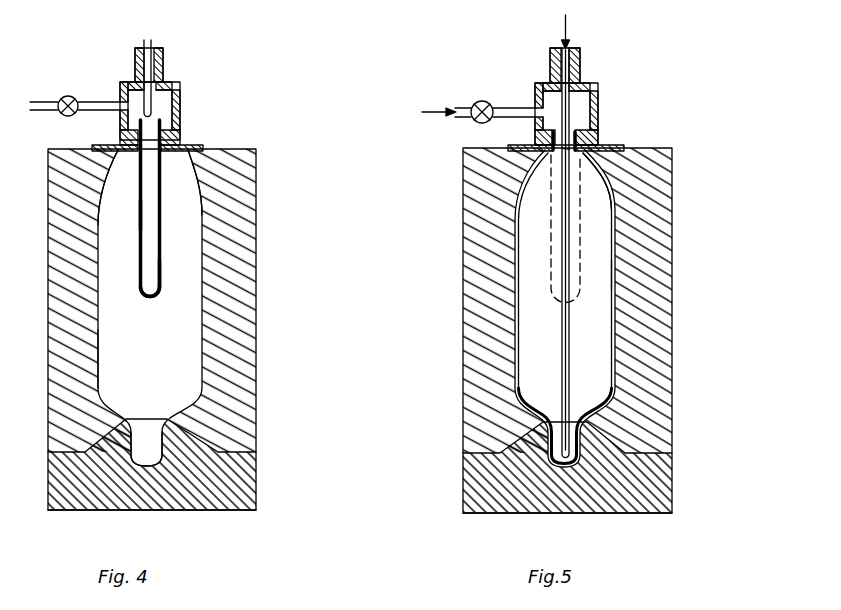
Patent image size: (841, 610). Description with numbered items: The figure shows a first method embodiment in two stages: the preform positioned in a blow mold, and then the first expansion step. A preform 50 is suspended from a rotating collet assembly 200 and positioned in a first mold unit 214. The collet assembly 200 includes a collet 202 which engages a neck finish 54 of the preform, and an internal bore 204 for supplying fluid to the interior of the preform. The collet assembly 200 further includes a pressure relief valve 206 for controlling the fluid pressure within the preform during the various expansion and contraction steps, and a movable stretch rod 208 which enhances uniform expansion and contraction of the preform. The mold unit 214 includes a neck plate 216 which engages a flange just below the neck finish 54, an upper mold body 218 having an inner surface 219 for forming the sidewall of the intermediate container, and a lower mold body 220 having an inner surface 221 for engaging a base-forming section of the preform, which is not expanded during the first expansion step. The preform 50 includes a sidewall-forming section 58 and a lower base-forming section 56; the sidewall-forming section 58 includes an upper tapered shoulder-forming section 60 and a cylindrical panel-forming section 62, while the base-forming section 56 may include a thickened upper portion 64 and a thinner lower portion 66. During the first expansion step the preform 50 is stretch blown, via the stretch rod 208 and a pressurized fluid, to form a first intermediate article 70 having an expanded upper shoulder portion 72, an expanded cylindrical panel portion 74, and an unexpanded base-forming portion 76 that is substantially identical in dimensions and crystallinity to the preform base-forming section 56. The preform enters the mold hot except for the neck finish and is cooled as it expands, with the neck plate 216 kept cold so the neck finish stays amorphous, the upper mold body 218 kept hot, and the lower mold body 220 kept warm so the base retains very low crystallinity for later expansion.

In FIG. 4, the preform 50 is at (172, 228).
In FIG. 5, the preform 50 is at (594, 269).
In FIG. 4, the neck finish 54 is at (177, 141).
In FIG. 4, the base-forming section 56 is at (150, 300).
In FIG. 4, the sidewall-forming section 58 is at (134, 216).
In FIG. 4, the shoulder-forming section 60 is at (205, 160).
In FIG. 4, the panel-forming section 62 is at (166, 192).
In FIG. 4, the thickened upper portion 64 is at (162, 268).
In FIG. 4, the thinner lower portion 66 is at (160, 300).
In FIG. 5, the first intermediate article 70 is at (626, 323).
In FIG. 5, the expanded upper shoulder portion 72 is at (596, 189).
In FIG. 5, the expanded cylindrical panel portion 74 is at (610, 271).
In FIG. 5, the unexpanded base-forming portion 76 is at (578, 428).
In FIG. 4, the rotating collet assembly 200 is at (188, 81).
In FIG. 5, the rotating collet assembly 200 is at (566, 96).
In FIG. 4, the collet 202 is at (180, 105).
In FIG. 4, the internal bore 204 is at (152, 134).
In FIG. 4, the pressure relief valve 206 is at (68, 96).
In FIG. 5, the pressure relief valve 206 is at (482, 100).
In FIG. 4, the stretch rod 208 is at (153, 46).
In FIG. 5, the stretch rod 208 is at (563, 341).
In FIG. 4, the first mold unit 214 is at (262, 268).
In FIG. 5, the first mold unit 214 is at (679, 189).
In FIG. 4, the neck plate 216 is at (201, 147).
In FIG. 5, the neck plate 216 is at (624, 147).
In FIG. 4, the upper mold body 218 is at (257, 295).
In FIG. 5, the upper mold body 218 is at (673, 213).
In FIG. 4, the inner surface 219 is at (99, 355).
In FIG. 4, the lower mold body 220 is at (216, 511).
In FIG. 5, the lower mold body 220 is at (638, 514).
In FIG. 4, the inner surface 221 is at (141, 430).